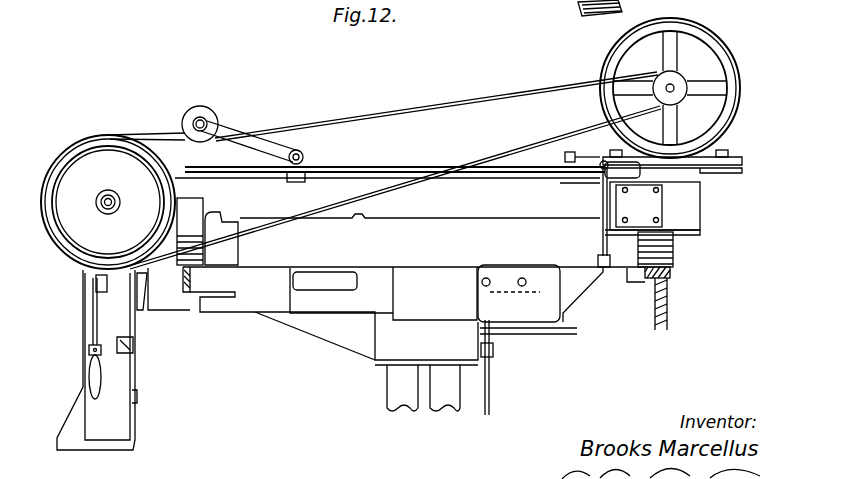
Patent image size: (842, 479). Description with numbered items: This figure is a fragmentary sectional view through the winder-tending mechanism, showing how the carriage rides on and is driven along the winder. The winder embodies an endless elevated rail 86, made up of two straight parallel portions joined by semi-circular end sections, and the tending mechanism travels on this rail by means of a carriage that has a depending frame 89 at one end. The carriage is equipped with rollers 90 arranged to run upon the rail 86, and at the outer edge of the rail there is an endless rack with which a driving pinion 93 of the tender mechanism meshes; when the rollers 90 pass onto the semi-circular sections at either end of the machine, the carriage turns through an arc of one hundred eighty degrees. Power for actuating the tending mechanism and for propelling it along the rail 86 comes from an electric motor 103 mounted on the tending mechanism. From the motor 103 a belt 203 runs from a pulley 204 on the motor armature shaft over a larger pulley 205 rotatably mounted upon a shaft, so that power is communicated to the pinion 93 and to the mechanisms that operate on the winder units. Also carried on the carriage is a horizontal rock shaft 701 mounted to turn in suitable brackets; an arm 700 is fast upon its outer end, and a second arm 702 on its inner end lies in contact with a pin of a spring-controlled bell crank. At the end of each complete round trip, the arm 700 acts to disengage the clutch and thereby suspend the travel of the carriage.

The endless elevated rail 86 is at (670, 277).
The depending frame 89 is at (122, 372).
The rollers 90 is at (206, 202).
The driving pinion 93 is at (166, 276).
The electric motor 103 is at (707, 34).
The belt 203 is at (403, 110).
The pulley 204 is at (688, 76).
The pulley 205 is at (103, 142).
The arm 700 is at (600, 233).
The horizontal rock shaft 701 is at (512, 173).
The second arm 702 is at (640, 184).